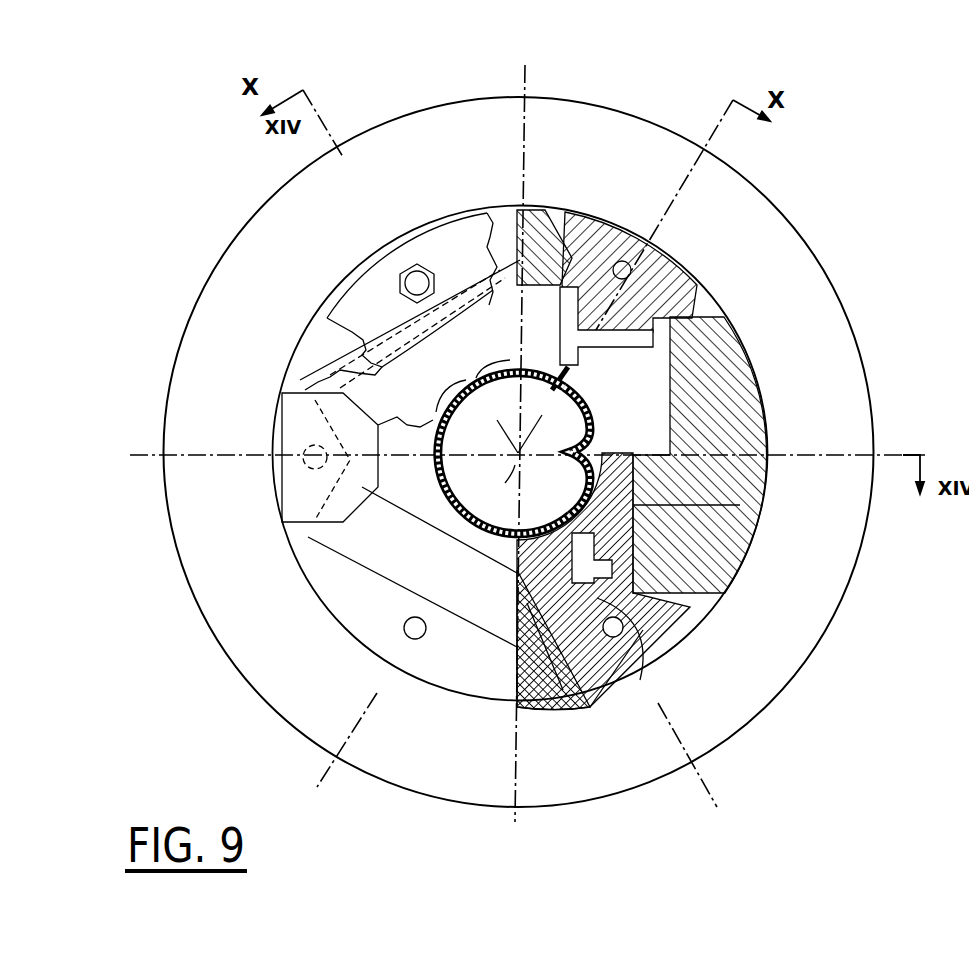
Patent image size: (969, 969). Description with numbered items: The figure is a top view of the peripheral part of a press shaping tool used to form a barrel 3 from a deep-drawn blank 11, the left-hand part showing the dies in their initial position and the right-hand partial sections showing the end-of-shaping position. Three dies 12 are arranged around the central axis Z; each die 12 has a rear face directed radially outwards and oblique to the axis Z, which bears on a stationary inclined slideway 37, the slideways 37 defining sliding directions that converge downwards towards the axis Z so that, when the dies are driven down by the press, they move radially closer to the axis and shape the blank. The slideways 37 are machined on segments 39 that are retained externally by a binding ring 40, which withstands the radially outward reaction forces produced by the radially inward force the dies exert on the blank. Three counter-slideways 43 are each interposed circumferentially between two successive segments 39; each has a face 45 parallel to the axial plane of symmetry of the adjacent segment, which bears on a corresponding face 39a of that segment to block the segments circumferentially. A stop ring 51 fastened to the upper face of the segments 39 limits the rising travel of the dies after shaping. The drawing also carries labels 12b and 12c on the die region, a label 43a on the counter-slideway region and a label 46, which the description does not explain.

The barrel 3 is at (587, 409).
The blank 11 is at (433, 485).
The die 12 is at (318, 400).
The jaw portion 12b is at (640, 655).
The jaw portion 12c is at (517, 613).
The inclined slideway 37 is at (715, 497).
The segment 39 is at (718, 377).
The face of the segment 39a is at (690, 590).
The binding ring 40 is at (863, 358).
The counter-slideway 43 is at (292, 418).
The clamping element portion 43a is at (581, 690).
The face of the counter-slideway 45 is at (705, 605).
The guide 46 is at (725, 316).
The stop ring 51 is at (353, 295).
The axis Z is at (507, 457).